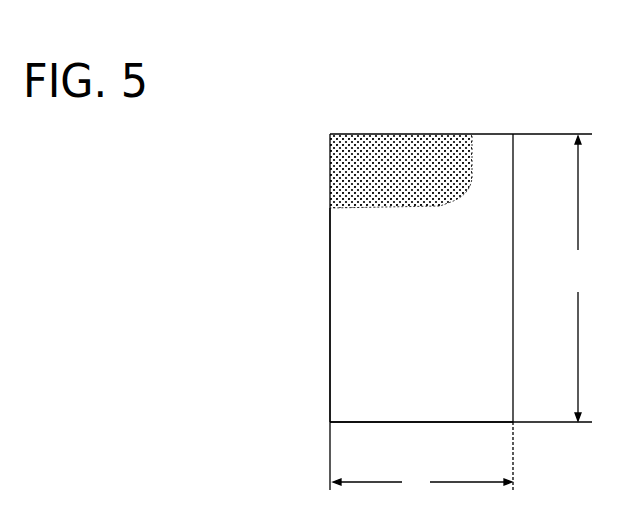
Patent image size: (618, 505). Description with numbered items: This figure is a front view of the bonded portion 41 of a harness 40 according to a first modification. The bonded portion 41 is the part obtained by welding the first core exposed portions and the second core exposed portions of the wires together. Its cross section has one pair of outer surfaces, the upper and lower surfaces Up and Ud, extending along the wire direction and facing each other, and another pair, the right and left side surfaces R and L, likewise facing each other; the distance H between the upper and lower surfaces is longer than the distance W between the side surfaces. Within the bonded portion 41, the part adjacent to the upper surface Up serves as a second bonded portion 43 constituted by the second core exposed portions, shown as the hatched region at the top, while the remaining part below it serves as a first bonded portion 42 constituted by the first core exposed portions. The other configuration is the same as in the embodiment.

The harness 40 is at (503, 53).
The bonded portion 41 is at (263, 153).
The first bonded portion 42 is at (330, 222).
The second bonded portion 43 is at (329, 167).